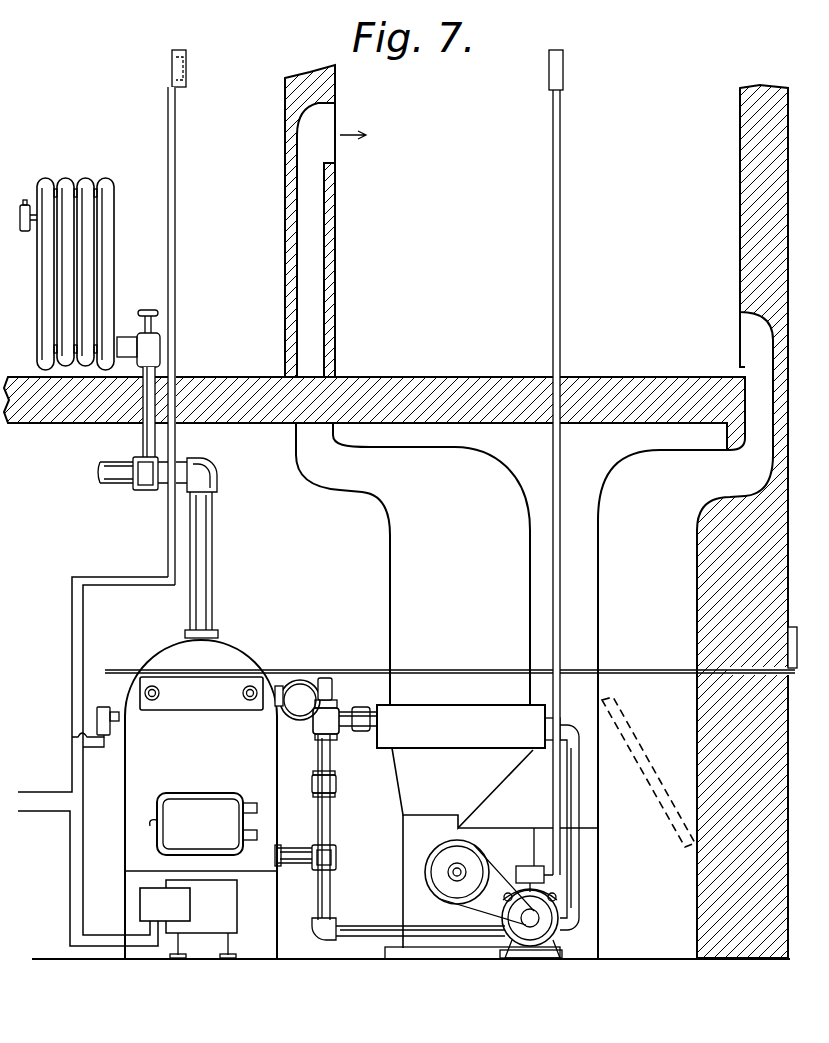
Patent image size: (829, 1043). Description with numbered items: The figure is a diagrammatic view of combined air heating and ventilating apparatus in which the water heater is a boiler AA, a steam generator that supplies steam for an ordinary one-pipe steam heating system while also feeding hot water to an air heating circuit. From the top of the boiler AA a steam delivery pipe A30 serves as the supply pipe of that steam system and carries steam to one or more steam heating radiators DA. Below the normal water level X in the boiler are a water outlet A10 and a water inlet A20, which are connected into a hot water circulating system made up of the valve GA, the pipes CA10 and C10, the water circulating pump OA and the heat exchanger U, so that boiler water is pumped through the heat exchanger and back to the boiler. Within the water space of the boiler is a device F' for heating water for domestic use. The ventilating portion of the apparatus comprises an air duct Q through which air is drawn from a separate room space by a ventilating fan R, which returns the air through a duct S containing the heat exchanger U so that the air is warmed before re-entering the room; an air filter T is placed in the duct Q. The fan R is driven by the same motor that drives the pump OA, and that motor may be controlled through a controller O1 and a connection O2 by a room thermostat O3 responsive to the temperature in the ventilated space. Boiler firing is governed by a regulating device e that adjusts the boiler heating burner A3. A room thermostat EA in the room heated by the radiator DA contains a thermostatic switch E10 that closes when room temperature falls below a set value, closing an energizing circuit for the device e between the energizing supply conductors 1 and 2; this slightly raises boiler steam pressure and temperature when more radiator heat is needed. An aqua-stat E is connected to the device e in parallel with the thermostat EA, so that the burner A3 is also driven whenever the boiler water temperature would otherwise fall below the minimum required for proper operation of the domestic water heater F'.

The steam heating radiator DA is at (87, 178).
The room thermostat EA is at (187, 70).
The thermostatic switch E10 is at (180, 50).
The steam delivery pipe A30 is at (214, 560).
The normal water level X is at (446, 651).
The domestic water heating device F' is at (201, 693).
The aqua-stat E is at (112, 729).
The energizing supply conductor 1 is at (30, 792).
The energizing supply conductor 2 is at (29, 814).
The boiler AA is at (201, 799).
The regulating device e is at (165, 904).
The boiler heating burner A3 is at (201, 919).
The water inlet A20 is at (293, 868).
The water outlet A10 is at (297, 680).
The valve GA is at (332, 736).
The circulating pipe CA10 is at (333, 800).
The heat exchanger U is at (468, 726).
The ventilating fan R is at (491, 853).
The controller O1 is at (522, 866).
The connection O2 is at (559, 590).
The room thermostat O3 is at (563, 70).
The circulating pipe C10 is at (582, 900).
The air duct Q is at (693, 521).
The air duct S is at (407, 385).
The air filter T is at (660, 768).
The water circulating pump OA is at (514, 960).